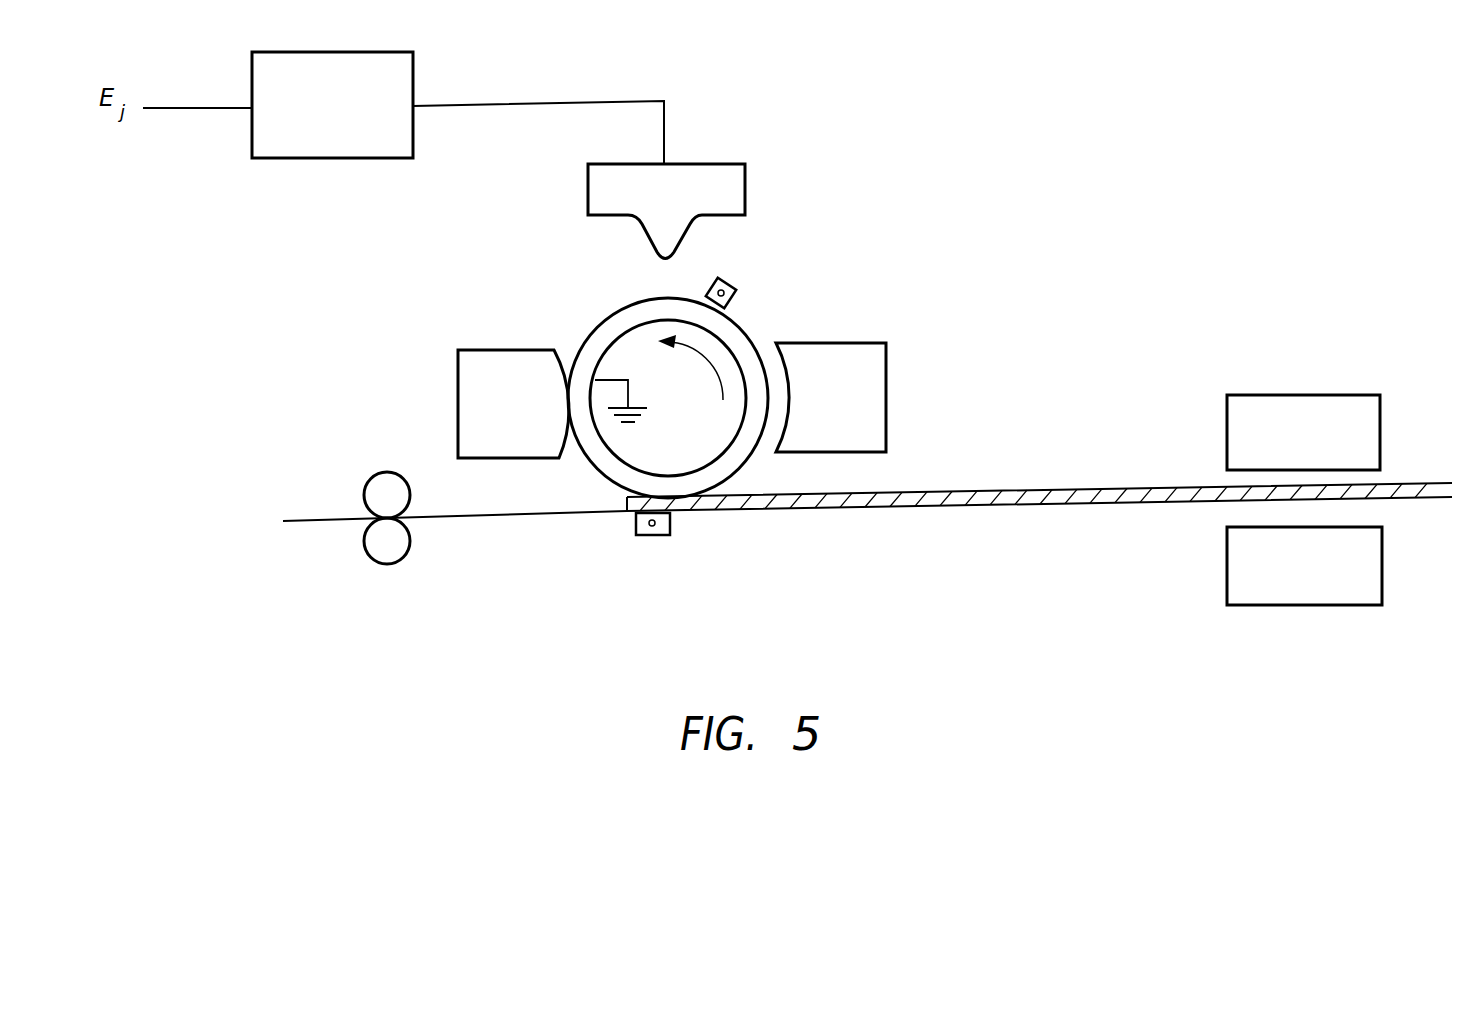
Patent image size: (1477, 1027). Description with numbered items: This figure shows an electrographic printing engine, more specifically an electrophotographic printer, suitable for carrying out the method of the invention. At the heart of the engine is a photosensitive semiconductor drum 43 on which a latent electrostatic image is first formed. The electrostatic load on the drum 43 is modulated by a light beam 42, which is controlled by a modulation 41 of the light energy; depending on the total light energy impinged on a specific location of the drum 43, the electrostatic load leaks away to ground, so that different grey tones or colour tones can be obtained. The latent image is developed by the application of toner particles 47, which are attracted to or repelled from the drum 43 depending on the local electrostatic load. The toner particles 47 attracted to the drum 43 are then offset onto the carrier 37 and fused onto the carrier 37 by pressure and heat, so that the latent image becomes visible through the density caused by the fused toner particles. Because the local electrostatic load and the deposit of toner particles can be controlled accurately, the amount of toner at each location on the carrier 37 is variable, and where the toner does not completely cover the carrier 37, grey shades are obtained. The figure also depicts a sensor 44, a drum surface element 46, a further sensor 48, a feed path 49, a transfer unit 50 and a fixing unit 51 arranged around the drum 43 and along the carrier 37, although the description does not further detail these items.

The modulation 41 is at (335, 65).
The light beam 42 is at (698, 172).
The semiconductor drum 43 is at (625, 305).
The sensor 44 is at (723, 279).
The grounded drum surface 46 is at (645, 473).
The toner particles 47 is at (483, 387).
The sensor 48 is at (655, 535).
The recording medium feed path 49 is at (467, 520).
The transfer unit 50 is at (878, 402).
The carrier 37 is at (1073, 488).
The fixing unit 51 is at (1290, 587).